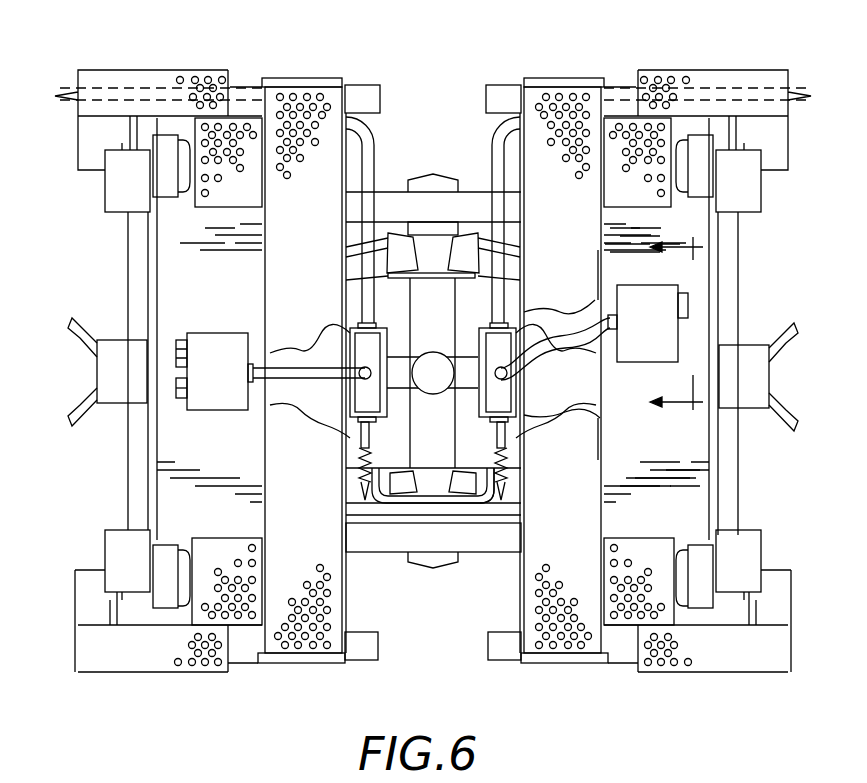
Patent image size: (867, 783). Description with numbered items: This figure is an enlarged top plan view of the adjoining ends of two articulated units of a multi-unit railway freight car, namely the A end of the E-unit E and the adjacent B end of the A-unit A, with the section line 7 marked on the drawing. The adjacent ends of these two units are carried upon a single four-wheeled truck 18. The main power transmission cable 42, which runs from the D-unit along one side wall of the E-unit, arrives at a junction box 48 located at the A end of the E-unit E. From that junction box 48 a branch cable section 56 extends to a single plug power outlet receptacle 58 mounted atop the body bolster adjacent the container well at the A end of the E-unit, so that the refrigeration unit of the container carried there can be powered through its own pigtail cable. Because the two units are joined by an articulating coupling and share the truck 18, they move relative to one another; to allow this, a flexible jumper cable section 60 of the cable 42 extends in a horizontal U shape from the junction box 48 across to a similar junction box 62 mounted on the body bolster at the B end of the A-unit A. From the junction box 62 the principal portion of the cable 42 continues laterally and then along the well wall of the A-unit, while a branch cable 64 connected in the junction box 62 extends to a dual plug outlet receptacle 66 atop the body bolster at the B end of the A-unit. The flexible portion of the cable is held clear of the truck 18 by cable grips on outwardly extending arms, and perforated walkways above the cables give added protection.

The A-unit A is at (282, 77).
The E-unit E is at (580, 77).
The section line 7- 7 is at (676, 327).
The four-wheeled truck 18 is at (387, 537).
The main power transmission cable 42 is at (493, 148).
The junction box 48 is at (503, 348).
The branch cable section 56 is at (562, 352).
The single plug power outlet receptacle 58 is at (690, 310).
The flexible jumper cable section 60 is at (478, 525).
The junction box 62 is at (360, 350).
The branch cable 64 is at (305, 382).
The dual plug outlet receptacle 66 is at (176, 400).